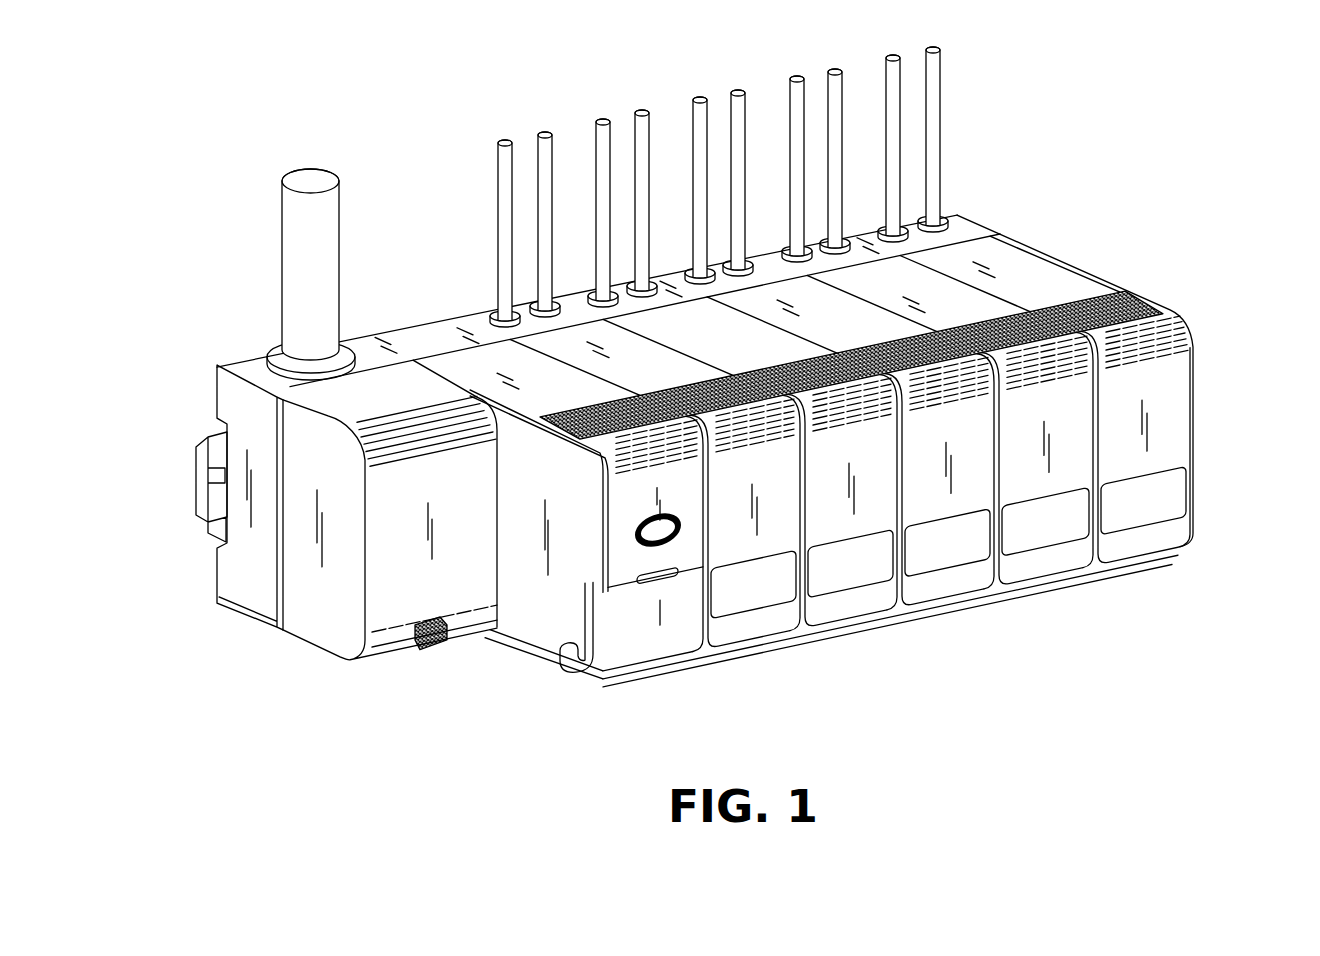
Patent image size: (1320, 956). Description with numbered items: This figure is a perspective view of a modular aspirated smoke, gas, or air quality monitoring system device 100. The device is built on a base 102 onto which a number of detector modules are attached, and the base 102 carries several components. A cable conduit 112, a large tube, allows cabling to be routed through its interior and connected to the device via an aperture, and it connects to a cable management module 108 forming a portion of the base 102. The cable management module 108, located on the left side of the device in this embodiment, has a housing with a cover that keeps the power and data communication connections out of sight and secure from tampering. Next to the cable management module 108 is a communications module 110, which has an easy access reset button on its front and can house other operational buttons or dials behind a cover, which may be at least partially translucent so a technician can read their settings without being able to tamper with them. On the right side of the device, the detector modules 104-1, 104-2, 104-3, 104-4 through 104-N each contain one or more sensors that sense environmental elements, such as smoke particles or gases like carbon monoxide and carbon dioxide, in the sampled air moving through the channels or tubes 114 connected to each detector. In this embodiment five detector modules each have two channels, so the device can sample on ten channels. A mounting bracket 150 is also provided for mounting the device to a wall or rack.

The aspirated smoke, gas, or air quality monitoring system device 100 is at (318, 98).
The base 102 is at (418, 340).
The detector module 104-1 is at (752, 636).
The detector module 104-2 is at (845, 608).
The detector module 104-3 is at (947, 595).
The detector module 104-4 is at (1040, 570).
The detector module 104-N is at (1168, 428).
The cable management module 108 is at (388, 573).
The communications module 110 is at (623, 570).
The cable conduit 112 is at (302, 252).
The channels/tubes 114 is at (500, 215).
The mounting bracket 150 is at (208, 456).